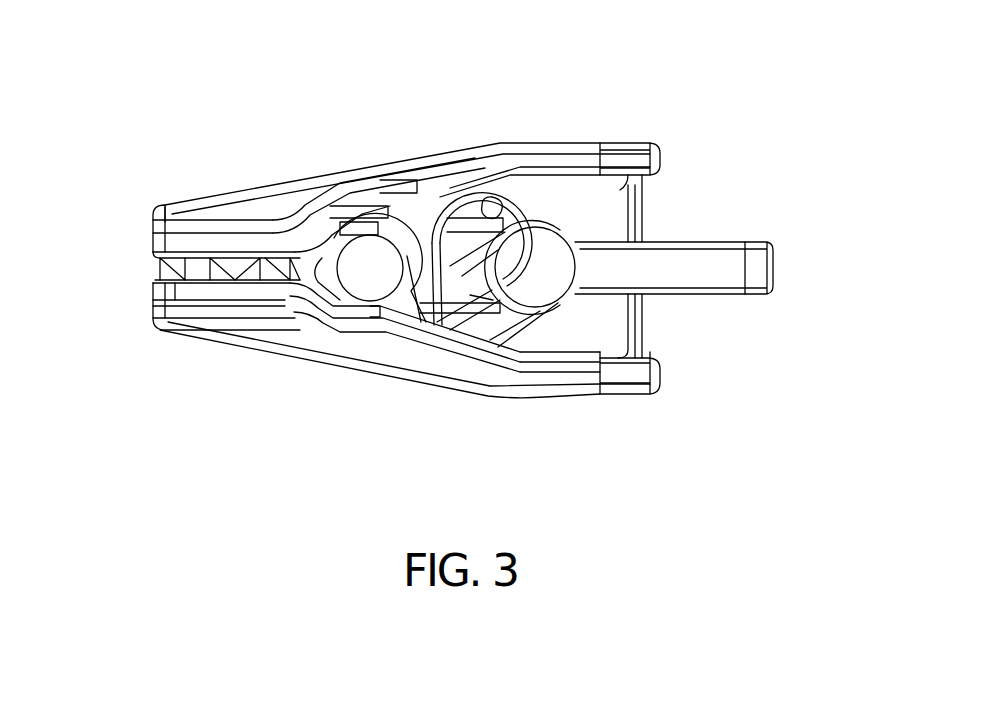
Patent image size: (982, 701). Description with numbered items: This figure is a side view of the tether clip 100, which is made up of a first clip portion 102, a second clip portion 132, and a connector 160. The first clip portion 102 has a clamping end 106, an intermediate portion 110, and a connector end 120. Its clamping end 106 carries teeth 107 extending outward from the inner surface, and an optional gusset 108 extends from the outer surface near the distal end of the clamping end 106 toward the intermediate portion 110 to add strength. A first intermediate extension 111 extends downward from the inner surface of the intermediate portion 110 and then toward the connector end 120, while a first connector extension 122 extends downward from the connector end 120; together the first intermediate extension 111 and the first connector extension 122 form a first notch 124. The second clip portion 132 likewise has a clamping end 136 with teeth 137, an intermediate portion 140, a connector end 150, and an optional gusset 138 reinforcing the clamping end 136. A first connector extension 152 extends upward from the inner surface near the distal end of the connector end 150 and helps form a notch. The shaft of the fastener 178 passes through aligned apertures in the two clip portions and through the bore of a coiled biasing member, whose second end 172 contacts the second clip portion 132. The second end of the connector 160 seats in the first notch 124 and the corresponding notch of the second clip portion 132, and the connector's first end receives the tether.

The tether clip 100 is at (160, 84).
The first clip portion 102 is at (488, 110).
The clamping end 106 is at (162, 228).
The teeth 107 is at (175, 245).
The gusset 108 is at (262, 205).
The intermediate portion 110 is at (383, 140).
The first intermediate extension 111 is at (505, 330).
The connector end 120 is at (594, 150).
The first connector extension 122 is at (612, 200).
The first notch 124 is at (500, 198).
The second clip portion 132 is at (427, 398).
The clamping end 136 is at (165, 298).
The teeth 137 is at (160, 267).
The gusset 138 is at (265, 330).
The intermediate portion 140 is at (361, 382).
The connector end 150 is at (597, 398).
The first connector extension 152 is at (612, 325).
The connector 160 is at (723, 265).
The second end 172 is at (470, 330).
The fastener 178 is at (371, 258).